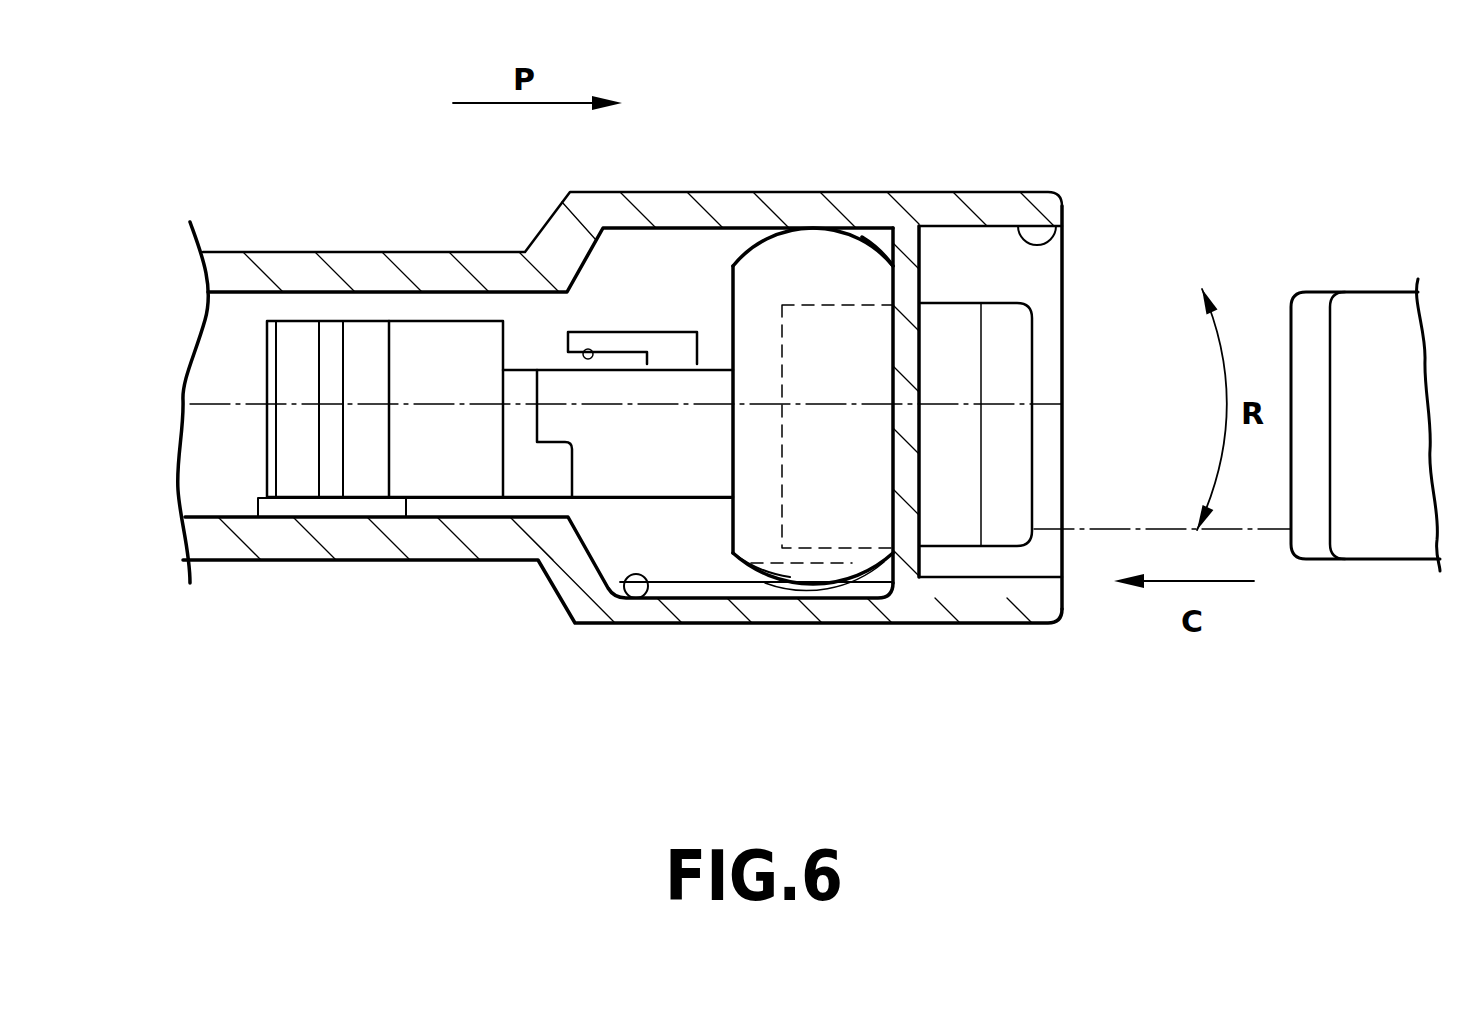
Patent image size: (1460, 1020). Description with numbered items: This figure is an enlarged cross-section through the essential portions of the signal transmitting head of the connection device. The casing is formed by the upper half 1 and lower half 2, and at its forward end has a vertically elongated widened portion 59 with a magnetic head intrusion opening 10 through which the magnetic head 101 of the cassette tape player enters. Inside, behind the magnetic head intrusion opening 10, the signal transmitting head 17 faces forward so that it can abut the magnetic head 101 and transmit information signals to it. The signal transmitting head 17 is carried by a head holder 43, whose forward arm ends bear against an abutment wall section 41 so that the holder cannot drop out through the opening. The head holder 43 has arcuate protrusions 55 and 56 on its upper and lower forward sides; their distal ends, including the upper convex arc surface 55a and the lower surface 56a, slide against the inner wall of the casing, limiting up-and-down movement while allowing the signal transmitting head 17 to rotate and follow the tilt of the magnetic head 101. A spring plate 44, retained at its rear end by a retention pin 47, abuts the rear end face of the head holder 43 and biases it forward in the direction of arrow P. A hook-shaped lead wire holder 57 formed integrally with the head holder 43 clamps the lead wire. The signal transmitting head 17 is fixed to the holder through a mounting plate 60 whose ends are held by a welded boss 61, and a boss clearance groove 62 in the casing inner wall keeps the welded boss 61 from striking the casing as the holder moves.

The upper half 1 is at (678, 207).
The lower half 2 is at (692, 618).
The magnetic head intrusion opening 10 is at (1060, 251).
The signal transmitting head 17 is at (1007, 337).
The abutment wall section 41 is at (895, 484).
The head holder 43 is at (606, 389).
The spring plate 44 is at (443, 339).
The retention pin 47 is at (329, 334).
The arcuate protrusion 55 is at (787, 230).
The contact portion 55a is at (873, 240).
The arcuate protrusion 56 is at (807, 570).
The curved seat portion 56a is at (757, 563).
The lead wire holder 57 is at (668, 348).
The widened portion 59 is at (848, 178).
The mounting plate 60 is at (887, 627).
The welded boss 61 is at (847, 567).
The boss clearance groove 62 is at (623, 597).
The magnetic head 101 is at (1354, 539).